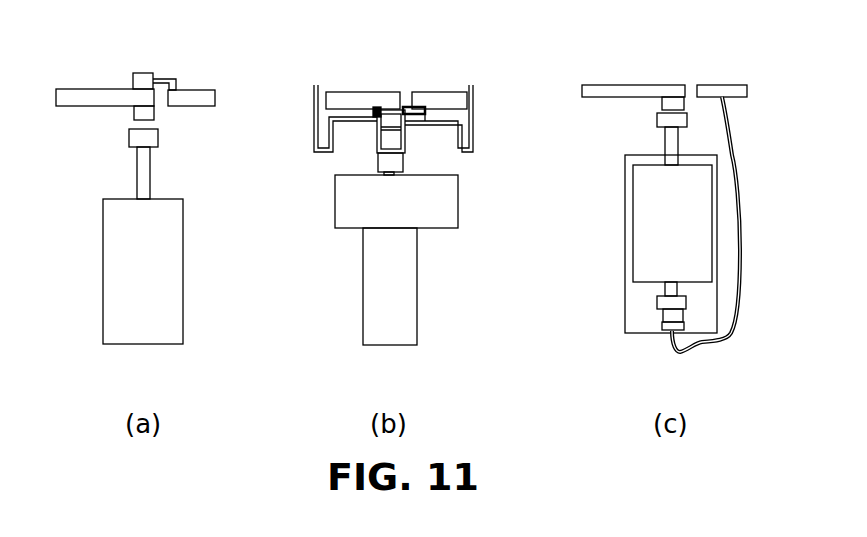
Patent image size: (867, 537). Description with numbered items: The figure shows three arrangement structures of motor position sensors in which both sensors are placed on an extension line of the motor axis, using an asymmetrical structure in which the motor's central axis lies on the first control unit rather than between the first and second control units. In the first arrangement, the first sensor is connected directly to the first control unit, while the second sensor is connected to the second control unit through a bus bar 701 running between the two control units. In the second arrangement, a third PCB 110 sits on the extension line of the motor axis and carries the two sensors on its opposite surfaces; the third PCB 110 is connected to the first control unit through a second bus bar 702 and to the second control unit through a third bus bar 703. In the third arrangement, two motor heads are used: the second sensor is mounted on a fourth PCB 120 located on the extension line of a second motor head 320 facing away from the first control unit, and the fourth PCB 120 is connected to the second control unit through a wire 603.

The third PCB 110 is at (383, 129).
The fourth PCB 120 is at (663, 328).
The second motor head 320 is at (657, 302).
The wire 603 is at (708, 345).
The bus bar 701 is at (164, 79).
The second bus bar 702 is at (378, 107).
The third bus bar 703 is at (406, 107).